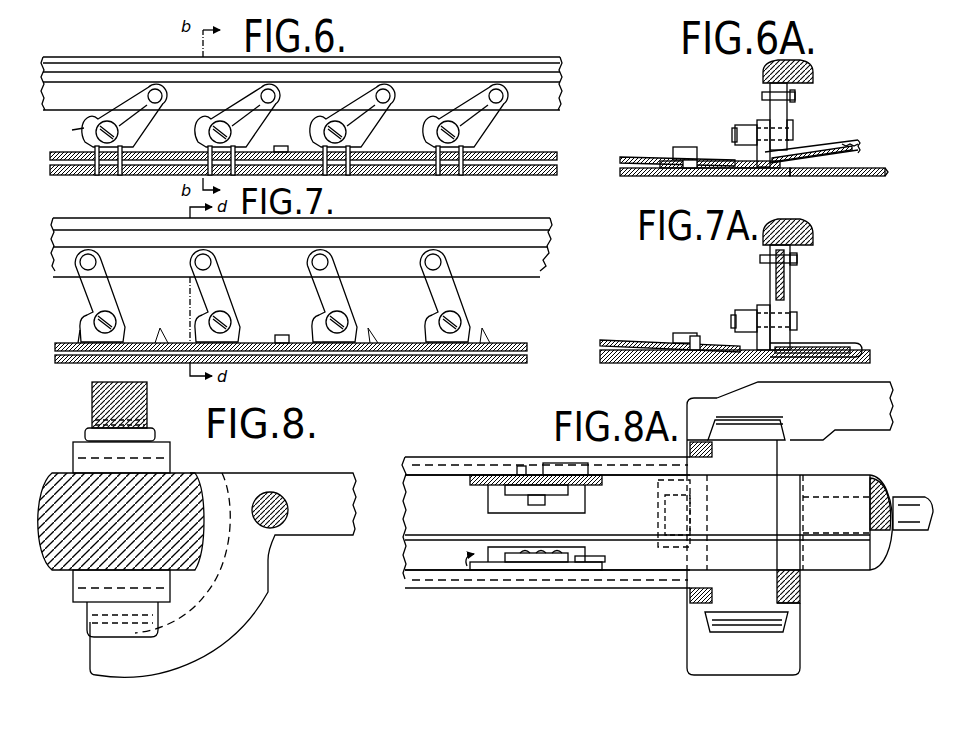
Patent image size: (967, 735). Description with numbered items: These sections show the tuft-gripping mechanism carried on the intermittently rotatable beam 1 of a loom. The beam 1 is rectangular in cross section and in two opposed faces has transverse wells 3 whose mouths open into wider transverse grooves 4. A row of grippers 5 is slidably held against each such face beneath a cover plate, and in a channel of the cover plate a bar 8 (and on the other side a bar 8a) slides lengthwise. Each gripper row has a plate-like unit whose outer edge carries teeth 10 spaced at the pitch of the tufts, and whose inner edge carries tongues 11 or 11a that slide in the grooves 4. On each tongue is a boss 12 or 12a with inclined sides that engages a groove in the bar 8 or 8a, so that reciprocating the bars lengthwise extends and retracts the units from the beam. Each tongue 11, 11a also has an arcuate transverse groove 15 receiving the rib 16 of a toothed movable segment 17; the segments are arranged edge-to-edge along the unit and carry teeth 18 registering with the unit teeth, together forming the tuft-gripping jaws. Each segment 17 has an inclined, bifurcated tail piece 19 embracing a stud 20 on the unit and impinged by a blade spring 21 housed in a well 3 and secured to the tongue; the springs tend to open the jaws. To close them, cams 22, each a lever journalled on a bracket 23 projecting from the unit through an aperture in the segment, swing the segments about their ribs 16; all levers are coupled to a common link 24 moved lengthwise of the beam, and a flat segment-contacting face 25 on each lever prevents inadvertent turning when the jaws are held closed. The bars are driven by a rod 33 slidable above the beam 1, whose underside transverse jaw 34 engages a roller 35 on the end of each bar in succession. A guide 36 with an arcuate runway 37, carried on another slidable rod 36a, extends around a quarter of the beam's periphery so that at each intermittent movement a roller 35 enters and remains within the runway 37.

In FIG. 8, the intermittently rotatable beam 1 is at (72, 556).
In FIG. 8A, the intermittently rotatable beam 1 is at (432, 530).
In FIG. 8A, the transverse well 3 is at (495, 547).
In FIG. 8A, the transverse groove 4 is at (464, 566).
In FIG. 6, the gripper 5 is at (405, 176).
In FIG. 7, the gripper 5 is at (291, 353).
In FIG. 6A, the gripper 5 is at (768, 176).
In FIG. 7A, the gripper 5 is at (776, 363).
In FIG. 8, the bar 8 is at (172, 466).
In FIG. 8A, the bar 8 is at (446, 457).
In FIG. 8, the bar 8a is at (80, 602).
In FIG. 8A, the bar 8a is at (640, 588).
In FIG. 6, the teeth 10 is at (116, 175).
In FIG. 6A, the teeth 10 is at (860, 176).
In FIG. 6A, the tongue 11 is at (632, 176).
In FIG. 7A, the tongue 11 is at (652, 363).
In FIG. 8A, the tongue 11 is at (494, 475).
In FIG. 8A, the tongue 11a is at (504, 570).
In FIG. 8A, the boss 12 is at (555, 463).
In FIG. 8A, the boss 12a is at (590, 580).
In FIG. 6A, the transverse groove of arcuate section 15 is at (740, 168).
In FIG. 6A, the rib 16 is at (732, 165).
In FIG. 7A, the rib 16 is at (730, 348).
In FIG. 6, the toothed movable segment 17 is at (366, 151).
In FIG. 7, the toothed movable segment 17 is at (162, 343).
In FIG. 6A, the toothed movable segment 17 is at (805, 150).
In FIG. 7A, the toothed movable segment 17 is at (830, 343).
In FIG. 6A, the teeth 18 is at (850, 146).
In FIG. 6A, the tail piece 19 is at (700, 168).
In FIG. 7A, the tail piece 19 is at (694, 336).
In FIG. 6, the stud 20 is at (282, 146).
In FIG. 7, the stud 20 is at (282, 335).
In FIG. 6A, the stud 20 is at (687, 147).
In FIG. 7A, the stud 20 is at (680, 333).
In FIG. 8A, the stud 20 is at (522, 466).
In FIG. 6A, the blade spring 21 is at (622, 157).
In FIG. 7A, the blade spring 21 is at (636, 340).
In FIG. 6, the cam 22 is at (143, 88).
In FIG. 7, the cam 22 is at (196, 294).
In FIG. 6A, the cam 22 is at (790, 114).
In FIG. 7A, the cam 22 is at (790, 290).
In FIG. 6, the bracket 23 is at (128, 124).
In FIG. 7, the bracket 23 is at (277, 322).
In FIG. 6A, the bracket 23 is at (768, 120).
In FIG. 7A, the bracket 23 is at (766, 305).
In FIG. 6, the link 24 is at (460, 62).
In FIG. 7, the link 24 is at (498, 226).
In FIG. 6A, the link 24 is at (812, 72).
In FIG. 7A, the link 24 is at (812, 240).
In FIG. 6, the flat segment-contacting face 25 is at (78, 130).
In FIG. 7, the flat segment-contacting face 25 is at (82, 328).
In FIG. 8A, the rod 33 is at (862, 382).
In FIG. 8A, the transverse jaw 34 is at (786, 432).
In FIG. 8A, the roller 35 is at (718, 398).
In FIG. 8, the guide 36 is at (215, 638).
In FIG. 8A, the guide 36 is at (800, 634).
In FIG. 8A, the rod 36a is at (910, 497).
In FIG. 8, the arcuate runway 37 is at (207, 590).
In FIG. 8A, the arcuate runway 37 is at (804, 600).